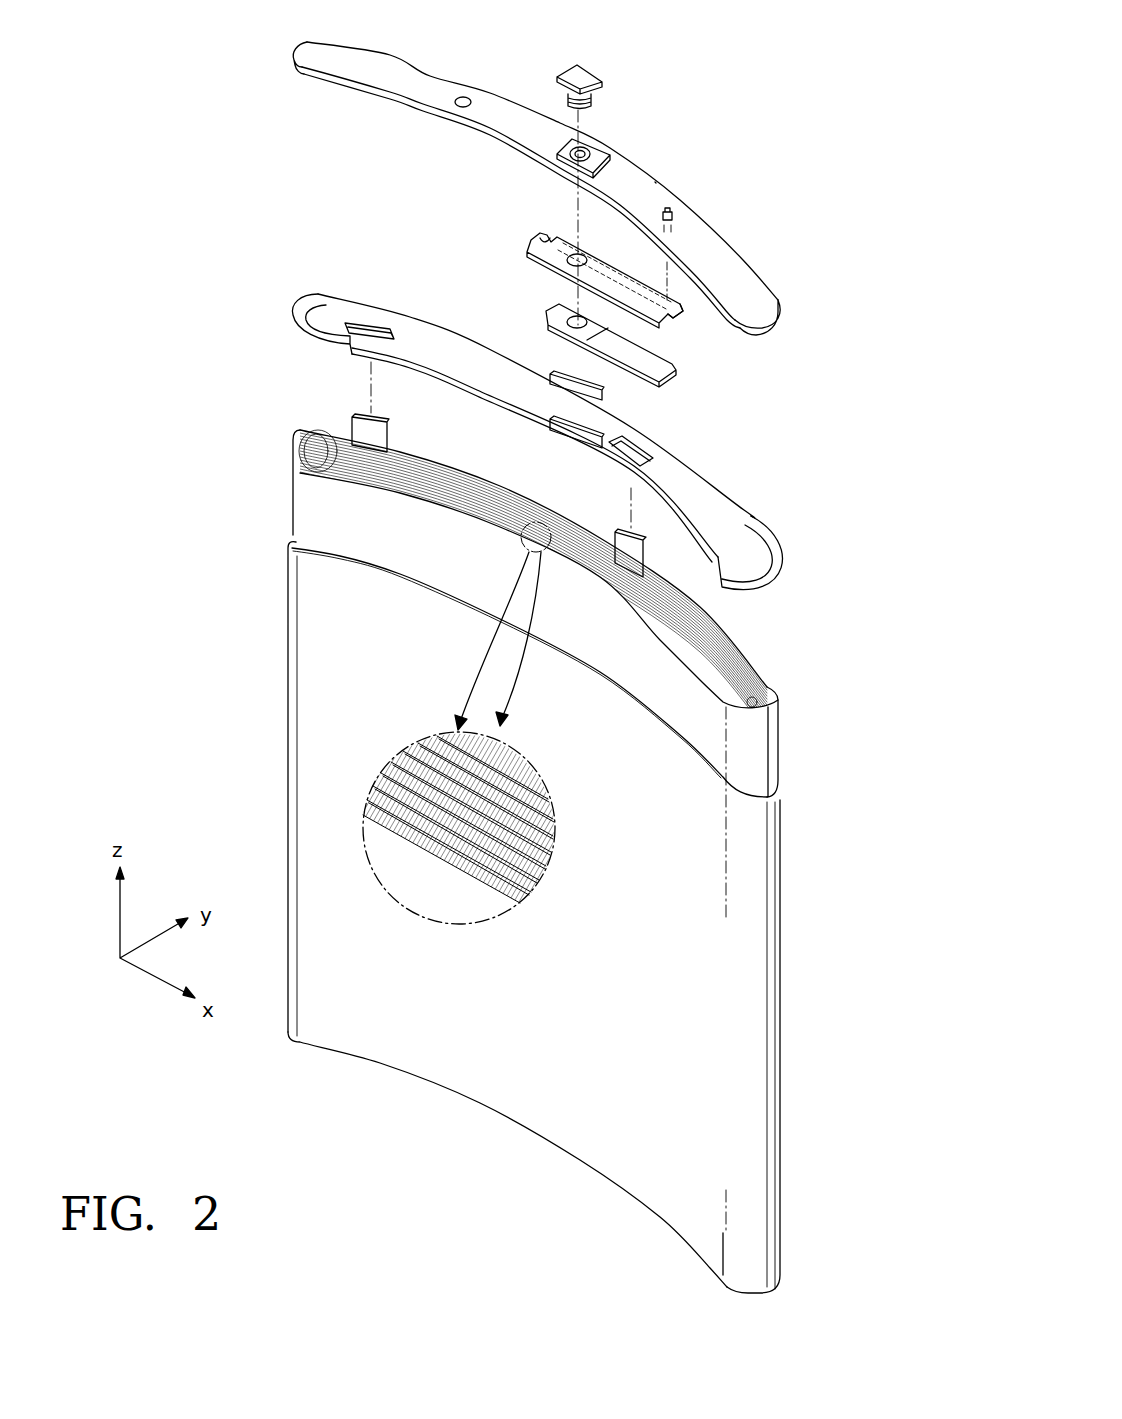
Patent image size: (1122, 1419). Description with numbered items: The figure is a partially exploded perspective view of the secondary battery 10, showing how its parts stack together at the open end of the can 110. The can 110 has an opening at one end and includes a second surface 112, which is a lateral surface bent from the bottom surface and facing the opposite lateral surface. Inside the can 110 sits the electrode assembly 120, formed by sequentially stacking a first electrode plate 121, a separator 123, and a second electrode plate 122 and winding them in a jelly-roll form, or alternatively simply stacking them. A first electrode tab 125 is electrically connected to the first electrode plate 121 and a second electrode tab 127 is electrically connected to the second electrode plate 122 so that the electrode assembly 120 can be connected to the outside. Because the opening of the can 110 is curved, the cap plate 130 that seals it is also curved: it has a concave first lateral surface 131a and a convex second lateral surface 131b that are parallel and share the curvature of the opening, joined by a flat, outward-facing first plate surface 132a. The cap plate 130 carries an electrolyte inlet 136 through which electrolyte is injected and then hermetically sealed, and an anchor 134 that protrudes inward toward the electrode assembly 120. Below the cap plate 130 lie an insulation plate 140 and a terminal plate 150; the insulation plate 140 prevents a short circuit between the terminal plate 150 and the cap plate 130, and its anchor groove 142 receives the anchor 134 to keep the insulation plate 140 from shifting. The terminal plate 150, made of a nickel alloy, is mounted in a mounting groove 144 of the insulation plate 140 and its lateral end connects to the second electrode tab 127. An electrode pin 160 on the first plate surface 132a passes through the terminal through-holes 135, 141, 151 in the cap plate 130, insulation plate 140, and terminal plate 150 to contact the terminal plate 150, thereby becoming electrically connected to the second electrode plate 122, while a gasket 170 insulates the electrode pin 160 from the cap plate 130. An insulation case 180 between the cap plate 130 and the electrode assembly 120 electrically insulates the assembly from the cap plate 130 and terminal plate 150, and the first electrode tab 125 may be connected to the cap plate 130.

The secondary battery 10 is at (762, 9).
The can 110 is at (577, 917).
The second surface 112 is at (594, 1126).
The electrode assembly 120 is at (580, 643).
The first electrode plate 121 is at (554, 820).
The second electrode plate 122 is at (550, 859).
The separator 123 is at (554, 840).
The first electrode tab 125 is at (354, 418).
The second electrode tab 127 is at (616, 532).
The cap plate 130 is at (530, 646).
The first lateral surface 131a is at (356, 93).
The second lateral surface 131b is at (656, 183).
The first plate surface 132a is at (726, 259).
The anchor 134 is at (673, 216).
The terminal through-hole 135 is at (554, 127).
The electrolyte inlet 136 is at (463, 97).
The insulation plate 140 is at (630, 305).
The terminal through-hole 141 is at (567, 263).
The anchor groove 142 is at (684, 313).
The mounting groove 144 is at (528, 245).
The terminal plate 150 is at (617, 363).
The terminal through-hole 151 is at (548, 326).
The electrode pin 160 is at (590, 79).
The gasket 170 is at (560, 142).
The insulation case 180 is at (744, 548).